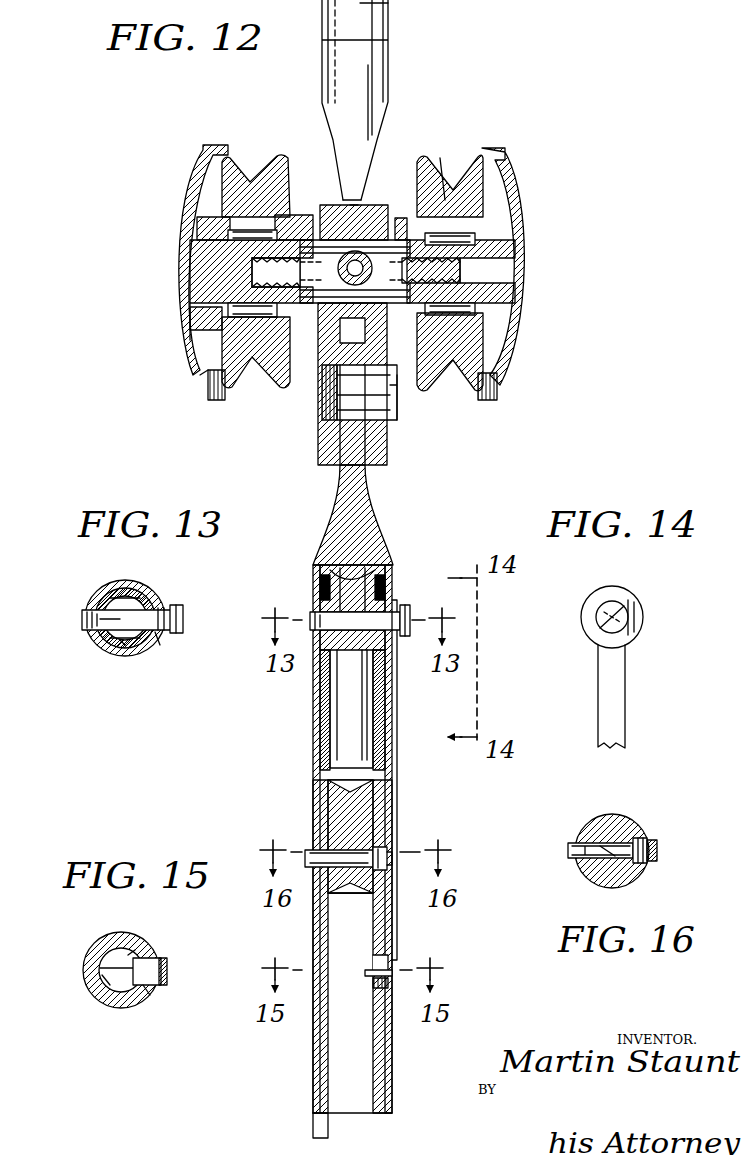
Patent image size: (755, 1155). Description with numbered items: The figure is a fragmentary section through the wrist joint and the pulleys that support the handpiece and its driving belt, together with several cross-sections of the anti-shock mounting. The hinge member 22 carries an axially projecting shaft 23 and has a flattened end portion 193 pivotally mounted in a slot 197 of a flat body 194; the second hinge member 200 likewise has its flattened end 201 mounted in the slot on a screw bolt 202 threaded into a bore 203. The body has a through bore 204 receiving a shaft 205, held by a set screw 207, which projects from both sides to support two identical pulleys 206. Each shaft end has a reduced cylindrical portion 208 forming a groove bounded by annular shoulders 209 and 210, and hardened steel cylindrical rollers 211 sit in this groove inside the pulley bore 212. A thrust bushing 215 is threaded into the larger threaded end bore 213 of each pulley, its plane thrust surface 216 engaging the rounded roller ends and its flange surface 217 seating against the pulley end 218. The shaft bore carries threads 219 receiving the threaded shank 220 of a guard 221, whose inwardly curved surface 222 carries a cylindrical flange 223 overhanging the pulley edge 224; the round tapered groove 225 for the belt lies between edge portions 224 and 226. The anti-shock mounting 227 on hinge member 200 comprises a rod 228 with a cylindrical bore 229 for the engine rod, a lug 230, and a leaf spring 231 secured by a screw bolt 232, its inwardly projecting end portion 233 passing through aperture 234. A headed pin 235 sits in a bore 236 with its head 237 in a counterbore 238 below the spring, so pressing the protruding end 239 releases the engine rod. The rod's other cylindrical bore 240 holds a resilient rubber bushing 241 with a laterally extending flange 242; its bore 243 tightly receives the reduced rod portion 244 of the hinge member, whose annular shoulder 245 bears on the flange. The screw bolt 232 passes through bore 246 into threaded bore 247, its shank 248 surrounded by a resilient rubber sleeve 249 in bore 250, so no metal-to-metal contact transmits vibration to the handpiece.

In FIG. 12, the hinge member 22 is at (376, 66).
In FIG. 12, the axially projecting shaft 23 is at (390, 12).
In FIG. 12, the flattened end portion 193 is at (341, 200).
In FIG. 12, the flat body 194 is at (318, 365).
In FIG. 12, the slot 197 is at (340, 452).
In FIG. 12, the second hinge member 200 is at (362, 500).
In FIG. 12, the flattened end 201 is at (385, 442).
In FIG. 12, the screw bolt 202 is at (392, 412).
In FIG. 12, the threaded bore 203 is at (323, 400).
In FIG. 12, the through bore 204 is at (342, 288).
In FIG. 12, the shaft 205 is at (362, 207).
In FIG. 12, the pulleys 206 is at (240, 183).
In FIG. 12, the set screw 207 is at (341, 240).
In FIG. 12, the reduced cylindrical portion 208 is at (290, 222).
In FIG. 12, the annular shoulder 209 is at (300, 252).
In FIG. 12, the annular shoulder 210 is at (272, 230).
In FIG. 12, the cylindrical rollers 211 is at (205, 297).
In FIG. 12, the bore 212 is at (256, 352).
In FIG. 12, the larger threaded end bore 213 is at (225, 318).
In FIG. 12, the thrust bushing 215 is at (212, 240).
In FIG. 12, the plane thrust surface 216 is at (238, 319).
In FIG. 12, the flange surface 217 is at (225, 318).
In FIG. 12, the pulley end 218 is at (212, 325).
In FIG. 12, the threads 219 is at (452, 274).
In FIG. 12, the threaded shank 220 is at (470, 303).
In FIG. 12, the guard 221 is at (522, 212).
In FIG. 12, the inwardly curved surface 222 is at (520, 355).
In FIG. 12, the cylindrical flange 223 is at (490, 150).
In FIG. 12, the pulley edge 224 is at (470, 165).
In FIG. 12, the round tapered groove 225 is at (445, 200).
In FIG. 12, the projecting edge portion 226 is at (448, 390).
In FIG. 12, the anti-shock mounting 227 is at (322, 708).
In FIG. 13, the anti-shock mounting 227 is at (110, 646).
In FIG. 12, the rod 228 is at (325, 792).
In FIG. 13, the rod 228 is at (110, 586).
In FIG. 15, the rod 228 is at (108, 942).
In FIG. 16, the rod 228 is at (600, 820).
In FIG. 12, the cylindrical bore 229 is at (338, 932).
In FIG. 15, the cylindrical bore 229 is at (100, 984).
In FIG. 16, the cylindrical bore 229 is at (645, 878).
In FIG. 12, the lug 230 is at (318, 1128).
In FIG. 12, the leaf spring 231 is at (399, 795).
In FIG. 13, the leaf spring 231 is at (158, 641).
In FIG. 14, the leaf spring 231 is at (628, 697).
In FIG. 15, the leaf spring 231 is at (168, 968).
In FIG. 16, the leaf spring 231 is at (660, 847).
In FIG. 12, the screw bolt 232 is at (405, 612).
In FIG. 13, the screw bolt 232 is at (181, 612).
In FIG. 14, the screw bolt 232 is at (632, 617).
In FIG. 12, the inwardly projecting end portion 233 is at (373, 985).
In FIG. 15, the inwardly projecting end portion 233 is at (115, 968).
In FIG. 12, the aperture 234 is at (388, 966).
In FIG. 15, the aperture 234 is at (150, 990).
In FIG. 12, the headed pin 235 is at (352, 860).
In FIG. 16, the headed pin 235 is at (608, 850).
In FIG. 12, the bore 236 is at (330, 853).
In FIG. 12, the pin head 237 is at (382, 850).
In FIG. 16, the pin head 237 is at (643, 843).
In FIG. 12, the counterbore 238 is at (390, 863).
In FIG. 12, the protruding end 239 is at (305, 858).
In FIG. 16, the protruding end 239 is at (570, 851).
In FIG. 12, the cylindrical bore 240 is at (324, 728).
In FIG. 12, the resilient rubber bushing 241 is at (376, 733).
In FIG. 12, the laterally extending flange 242 is at (320, 580).
In FIG. 12, the bore 243 is at (362, 704).
In FIG. 12, the reduced rod portion 244 is at (366, 716).
In FIG. 13, the reduced rod portion 244 is at (128, 655).
In FIG. 12, the annular shoulder 245 is at (385, 580).
In FIG. 12, the bore 246 is at (412, 622).
In FIG. 13, the bore 246 is at (168, 627).
In FIG. 12, the threaded bore 247 is at (312, 620).
In FIG. 13, the threaded bore 247 is at (90, 619).
In FIG. 12, the shank 248 is at (358, 598).
In FIG. 13, the shank 248 is at (115, 624).
In FIG. 12, the resilient rubber sleeve 249 is at (333, 575).
In FIG. 13, the resilient rubber sleeve 249 is at (96, 603).
In FIG. 12, the bore 250 is at (343, 562).